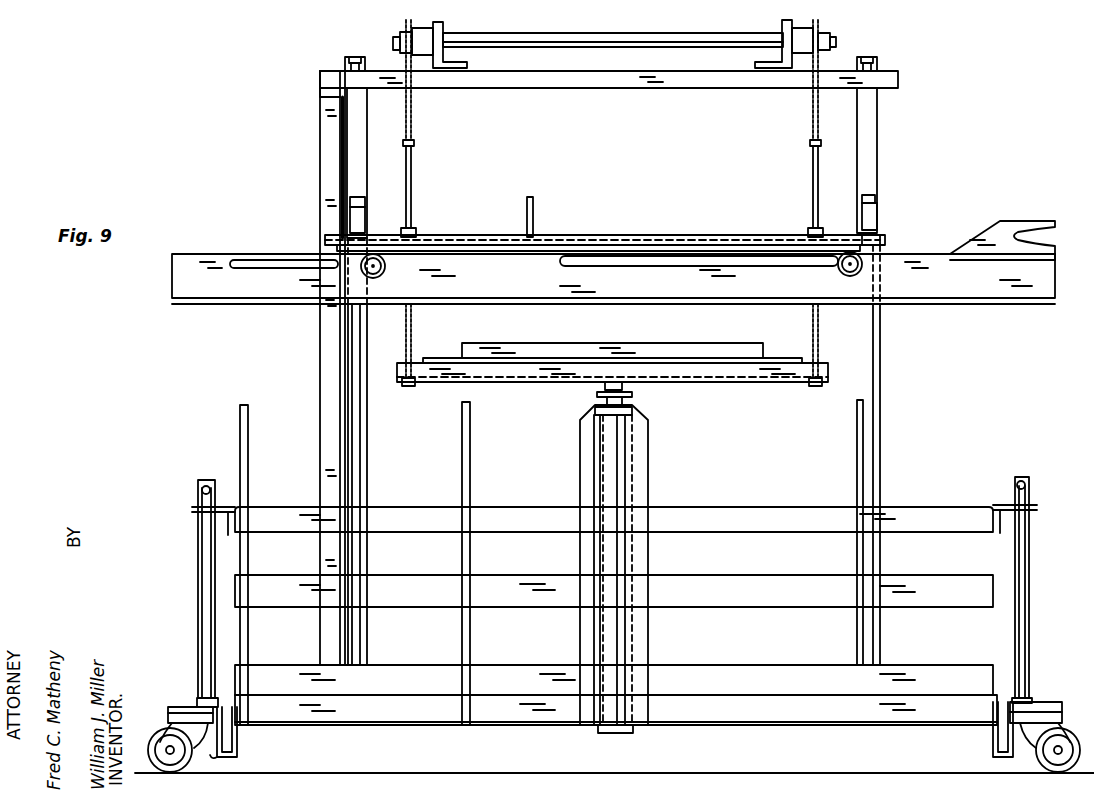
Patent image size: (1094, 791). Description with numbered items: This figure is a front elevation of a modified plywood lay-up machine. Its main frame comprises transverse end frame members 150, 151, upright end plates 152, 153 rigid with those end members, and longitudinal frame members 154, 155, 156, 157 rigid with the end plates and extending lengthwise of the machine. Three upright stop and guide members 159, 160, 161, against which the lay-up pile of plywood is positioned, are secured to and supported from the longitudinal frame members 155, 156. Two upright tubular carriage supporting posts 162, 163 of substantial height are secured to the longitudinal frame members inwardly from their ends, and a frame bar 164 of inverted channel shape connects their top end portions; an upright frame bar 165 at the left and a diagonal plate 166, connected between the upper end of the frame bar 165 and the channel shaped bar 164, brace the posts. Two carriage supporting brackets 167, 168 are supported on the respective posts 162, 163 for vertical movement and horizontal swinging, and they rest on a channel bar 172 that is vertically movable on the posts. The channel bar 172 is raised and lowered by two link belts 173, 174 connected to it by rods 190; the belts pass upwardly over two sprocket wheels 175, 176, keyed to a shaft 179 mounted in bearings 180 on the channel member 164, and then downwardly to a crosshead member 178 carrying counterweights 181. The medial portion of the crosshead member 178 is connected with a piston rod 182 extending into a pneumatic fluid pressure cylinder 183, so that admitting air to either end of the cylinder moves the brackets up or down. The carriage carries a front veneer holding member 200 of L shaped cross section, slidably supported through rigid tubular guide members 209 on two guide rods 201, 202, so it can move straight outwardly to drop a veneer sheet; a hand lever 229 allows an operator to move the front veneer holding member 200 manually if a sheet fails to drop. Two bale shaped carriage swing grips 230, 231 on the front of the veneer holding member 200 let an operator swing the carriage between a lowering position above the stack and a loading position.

The transverse end frame member 150 is at (188, 707).
The transverse end frame member 151 is at (1045, 700).
The upright end plate 152 is at (233, 637).
The upright end plate 153 is at (997, 644).
The longitudinal frame member 154 is at (918, 716).
The longitudinal frame member 155 is at (956, 668).
The longitudinal frame member 156 is at (964, 571).
The longitudinal frame member 157 is at (947, 507).
The upright stop and guide member 159 is at (245, 487).
The upright stop and guide member 160 is at (471, 475).
The upright stop and guide member 161 is at (858, 475).
The tubular carriage supporting post 162 is at (368, 434).
The tubular carriage supporting post 163 is at (880, 440).
The frame bar 164 is at (722, 83).
The upright frame bar 165 is at (324, 190).
The diagonal plate 166 is at (332, 71).
The carriage supporting bracket 167 is at (344, 145).
The carriage supporting bracket 168 is at (878, 184).
The channel bar 172 is at (731, 238).
The link belt 173 is at (412, 124).
The link belt 174 is at (813, 118).
The sprocket wheel 175 is at (397, 26).
The sprocket wheel 176 is at (822, 29).
The crosshead member 178 is at (722, 378).
The shaft 179 is at (710, 36).
The bearing 180 is at (428, 38).
The counterweight 181 is at (703, 353).
The piston rod 182 is at (628, 390).
The fluid pressure cylinder 183 is at (620, 480).
The rod 190 is at (409, 196).
The front veneer holding member 200 is at (540, 288).
The guide rod 201 is at (379, 273).
The guide rod 202 is at (846, 269).
The tubular guide member 209 is at (385, 262).
The hand lever 229 is at (534, 240).
The carriage swing grip 230 is at (250, 267).
The carriage swing grip 231 is at (678, 265).